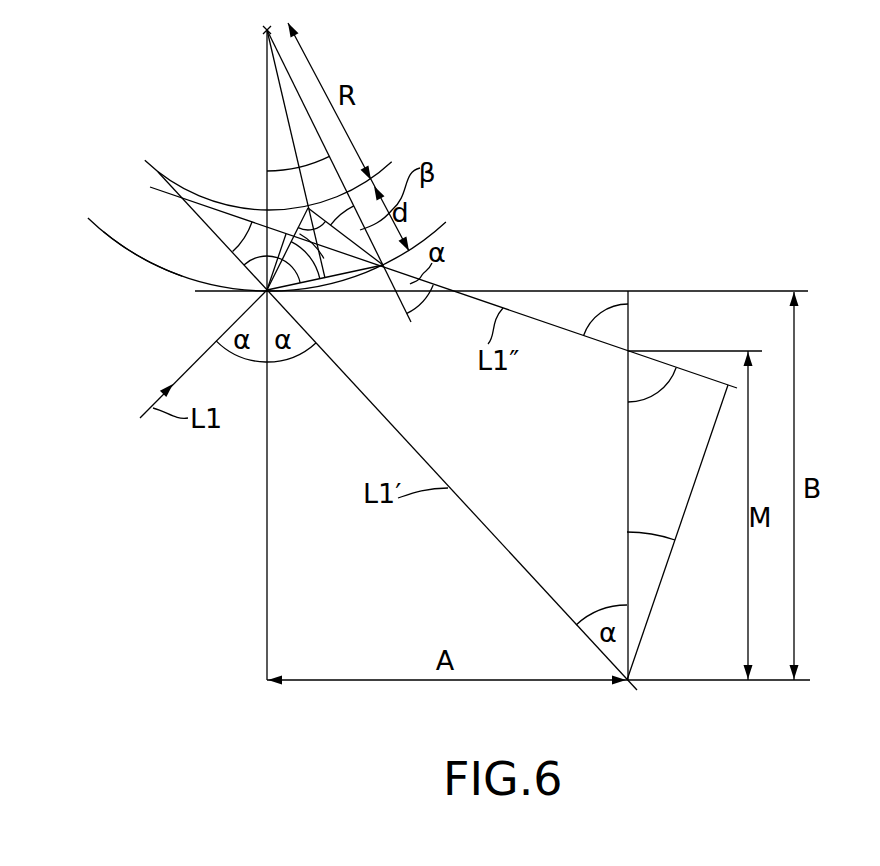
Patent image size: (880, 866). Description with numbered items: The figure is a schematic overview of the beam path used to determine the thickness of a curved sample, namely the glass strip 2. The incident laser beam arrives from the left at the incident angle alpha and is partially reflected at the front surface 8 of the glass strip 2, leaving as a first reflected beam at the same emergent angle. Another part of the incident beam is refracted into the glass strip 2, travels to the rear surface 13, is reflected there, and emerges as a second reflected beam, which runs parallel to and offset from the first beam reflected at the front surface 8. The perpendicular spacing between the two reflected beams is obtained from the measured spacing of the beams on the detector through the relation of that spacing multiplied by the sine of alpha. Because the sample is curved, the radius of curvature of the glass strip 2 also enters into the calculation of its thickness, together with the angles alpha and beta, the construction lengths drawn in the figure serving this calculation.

The glass strip 2 is at (121, 234).
The front surface 8 is at (112, 253).
The rear surface 13 is at (142, 152).